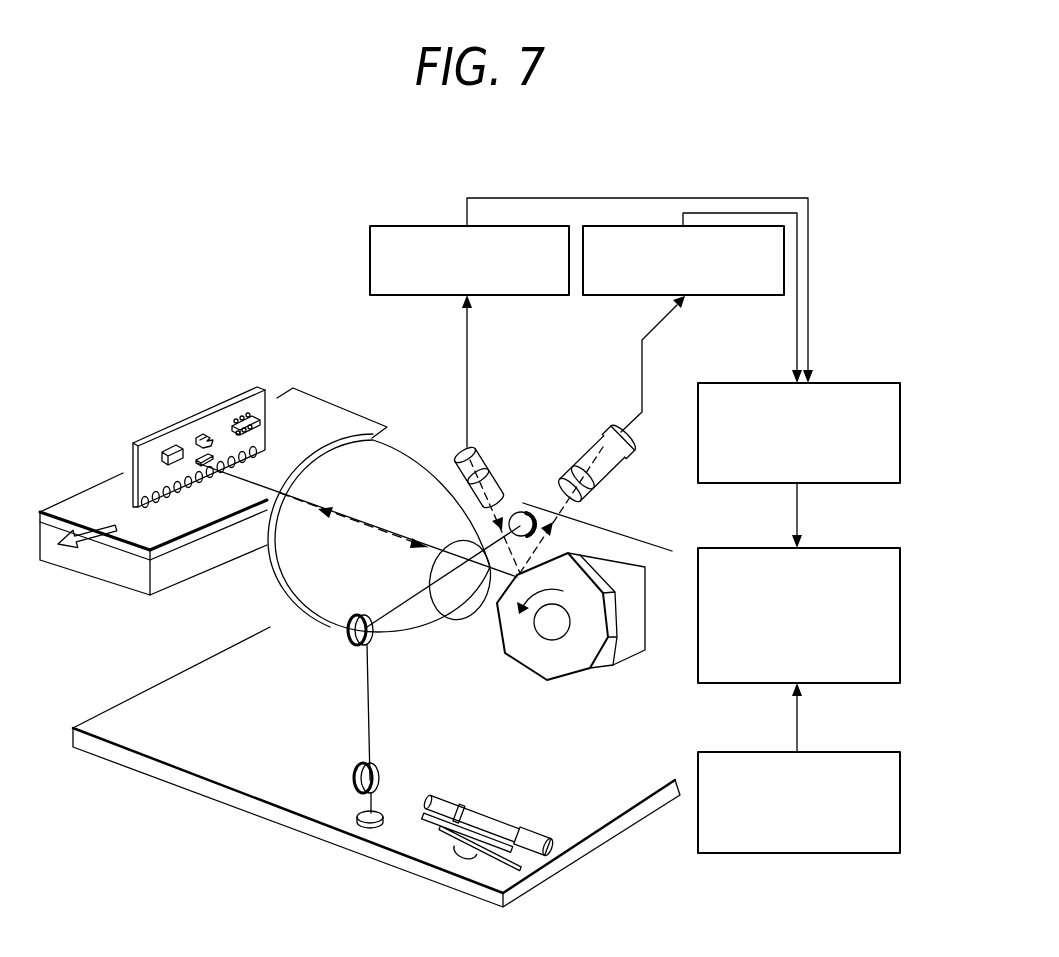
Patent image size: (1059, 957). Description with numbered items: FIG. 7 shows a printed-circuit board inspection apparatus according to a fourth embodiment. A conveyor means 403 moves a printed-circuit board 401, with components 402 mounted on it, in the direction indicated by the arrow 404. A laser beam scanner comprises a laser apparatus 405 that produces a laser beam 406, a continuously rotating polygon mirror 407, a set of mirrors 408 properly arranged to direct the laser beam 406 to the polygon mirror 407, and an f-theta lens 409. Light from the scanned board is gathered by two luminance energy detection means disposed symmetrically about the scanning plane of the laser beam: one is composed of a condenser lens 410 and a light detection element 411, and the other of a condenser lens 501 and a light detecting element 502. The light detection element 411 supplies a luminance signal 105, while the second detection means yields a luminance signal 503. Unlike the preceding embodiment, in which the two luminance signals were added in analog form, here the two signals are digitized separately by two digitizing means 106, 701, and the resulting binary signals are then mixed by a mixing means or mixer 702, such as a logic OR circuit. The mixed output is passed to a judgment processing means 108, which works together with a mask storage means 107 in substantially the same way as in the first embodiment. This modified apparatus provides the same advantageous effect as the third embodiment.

The digitizing means 701 is at (394, 226).
The digitizing means 106 is at (758, 295).
The luminance signal 105 is at (642, 332).
The mixer 702 is at (870, 383).
The judgment processing means 108 is at (866, 548).
The mask storage means 107 is at (868, 752).
The luminance signal 503 is at (469, 347).
The printed-circuit board 401 is at (146, 437).
The components 402 is at (170, 447).
The conveyor means 403 is at (123, 573).
The arrow 404 is at (65, 560).
The laser apparatus 405 is at (492, 822).
The laser beam 406 is at (369, 715).
The polygon mirror 407 is at (538, 660).
The mirrors 408 is at (524, 507).
The f-theta lens 409 is at (283, 590).
The condenser lens 410 is at (607, 480).
The light detection element 411 is at (603, 435).
The condenser lens 501 is at (490, 463).
The light detecting element 502 is at (457, 452).